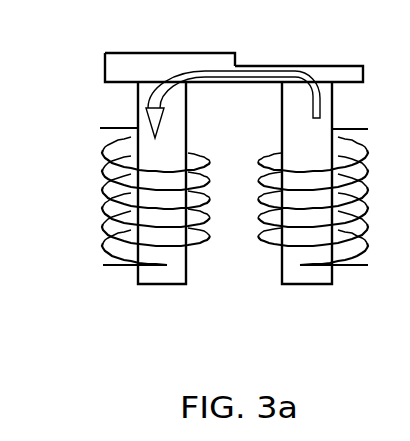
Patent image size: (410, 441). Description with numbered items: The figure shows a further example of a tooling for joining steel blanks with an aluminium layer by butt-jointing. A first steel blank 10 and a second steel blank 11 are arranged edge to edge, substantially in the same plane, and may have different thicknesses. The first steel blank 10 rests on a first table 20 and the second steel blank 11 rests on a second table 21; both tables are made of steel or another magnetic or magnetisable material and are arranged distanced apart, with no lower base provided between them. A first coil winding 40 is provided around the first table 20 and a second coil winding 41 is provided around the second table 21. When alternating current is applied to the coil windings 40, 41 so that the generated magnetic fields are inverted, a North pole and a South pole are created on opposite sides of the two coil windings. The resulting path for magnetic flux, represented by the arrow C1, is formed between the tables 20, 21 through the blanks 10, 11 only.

The first steel blank 10 is at (133, 69).
The second steel blank 11 is at (342, 66).
The arrow representing magnetic flux path C1 is at (247, 66).
The first table 20 is at (152, 280).
The second table 21 is at (300, 280).
The first coil winding 40 is at (105, 183).
The second coil winding 41 is at (366, 217).